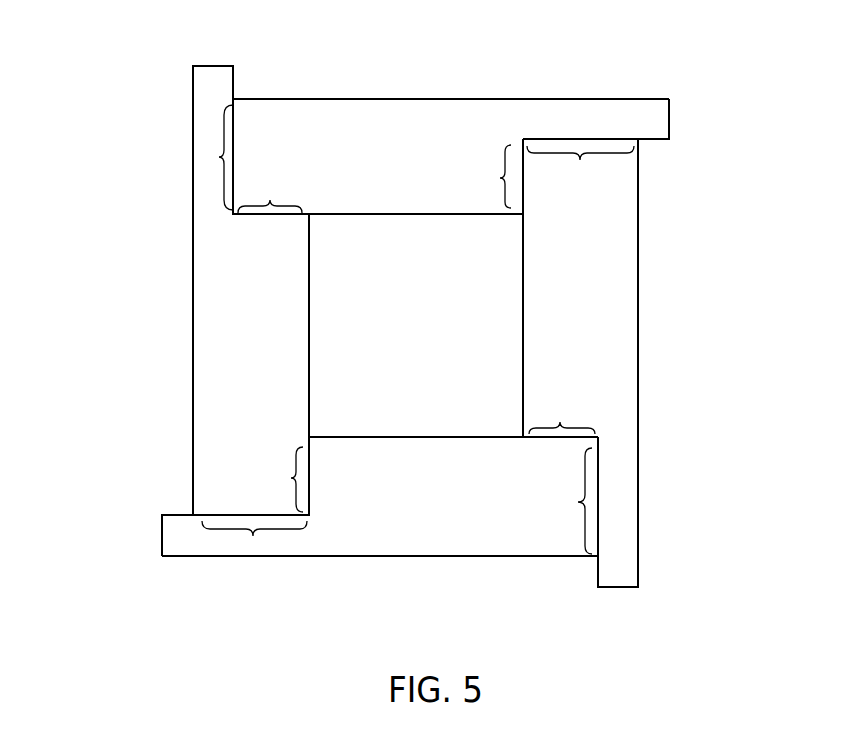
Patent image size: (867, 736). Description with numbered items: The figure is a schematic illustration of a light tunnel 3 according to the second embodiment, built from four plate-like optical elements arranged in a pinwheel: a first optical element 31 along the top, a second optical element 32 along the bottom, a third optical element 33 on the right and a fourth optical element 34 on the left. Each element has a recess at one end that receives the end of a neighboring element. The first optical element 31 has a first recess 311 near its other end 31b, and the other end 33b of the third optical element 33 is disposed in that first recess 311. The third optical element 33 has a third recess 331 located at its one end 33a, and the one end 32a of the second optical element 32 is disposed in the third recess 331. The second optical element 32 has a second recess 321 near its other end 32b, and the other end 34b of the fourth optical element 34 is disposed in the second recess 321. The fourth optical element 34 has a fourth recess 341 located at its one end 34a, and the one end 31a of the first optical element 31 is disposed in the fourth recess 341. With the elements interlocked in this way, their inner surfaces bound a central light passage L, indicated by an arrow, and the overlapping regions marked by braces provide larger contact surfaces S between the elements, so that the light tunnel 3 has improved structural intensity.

The light tunnel 3 is at (82, 39).
The first optical element 31 is at (451, 118).
The one end of the first optical element 31a is at (257, 142).
The other end of the first optical element 31b is at (565, 112).
The first recess 311 is at (613, 139).
The second optical element 32 is at (320, 540).
The one end of the second optical element 32a is at (570, 538).
The other end of the second optical element 32b is at (207, 545).
The second recess 321 is at (203, 518).
The third optical element 33 is at (641, 363).
The one end of the third optical element 33a is at (615, 535).
The other end of the third optical element 33b is at (615, 170).
The third recess 331 is at (597, 487).
The fourth optical element 34 is at (201, 259).
The one end of the fourth optical element 34a is at (208, 135).
The other end of the fourth optical element 34b is at (225, 477).
The fourth recess 341 is at (233, 85).
The light passage L is at (477, 302).
The contact surfaces S is at (415, 338).